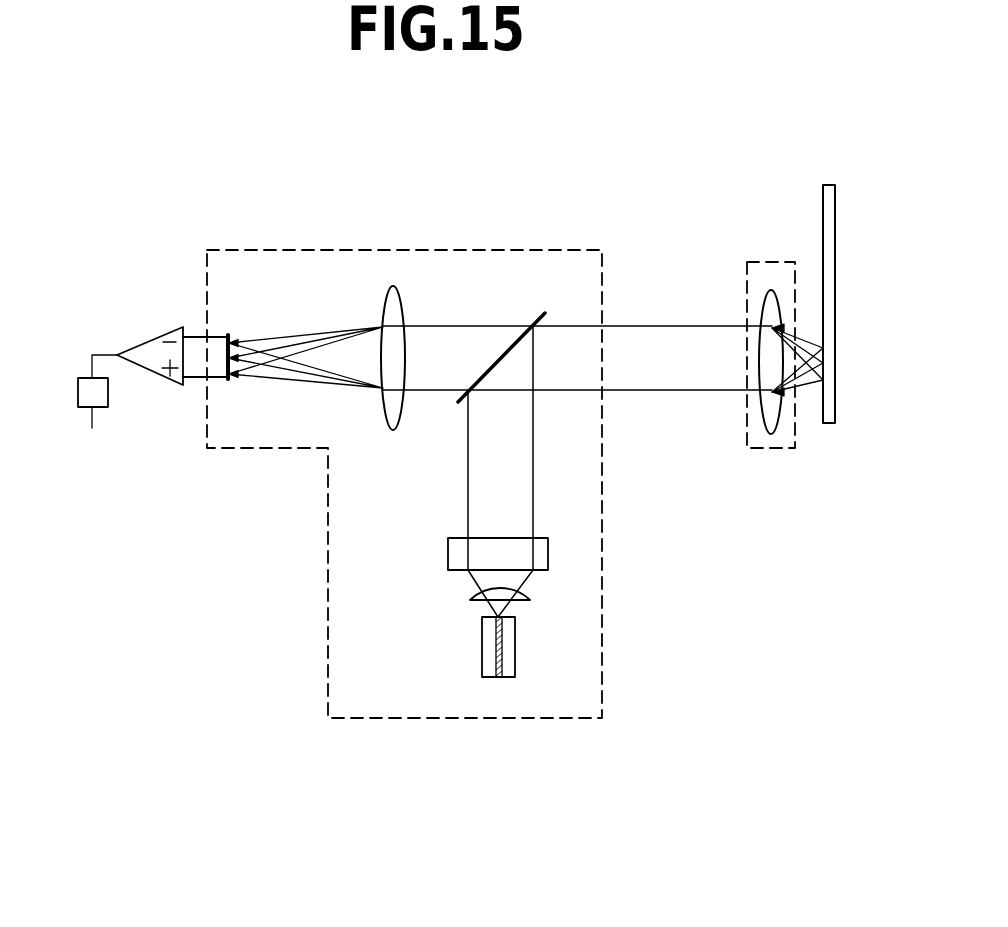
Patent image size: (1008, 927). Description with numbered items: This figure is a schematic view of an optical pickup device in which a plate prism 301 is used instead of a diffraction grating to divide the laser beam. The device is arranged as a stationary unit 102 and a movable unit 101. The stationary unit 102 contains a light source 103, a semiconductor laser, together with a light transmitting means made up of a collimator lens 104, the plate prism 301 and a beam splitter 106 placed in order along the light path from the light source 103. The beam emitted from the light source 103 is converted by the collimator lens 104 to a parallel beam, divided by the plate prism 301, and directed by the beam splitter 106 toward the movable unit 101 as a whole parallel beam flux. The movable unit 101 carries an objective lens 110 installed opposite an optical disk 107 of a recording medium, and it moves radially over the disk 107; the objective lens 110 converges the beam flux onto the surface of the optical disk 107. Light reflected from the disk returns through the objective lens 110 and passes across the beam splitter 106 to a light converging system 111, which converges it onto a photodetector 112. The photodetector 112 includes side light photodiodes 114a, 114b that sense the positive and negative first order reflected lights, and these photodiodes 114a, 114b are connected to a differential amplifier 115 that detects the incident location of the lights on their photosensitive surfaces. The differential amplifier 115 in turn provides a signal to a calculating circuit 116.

The movable unit 101 is at (745, 265).
The stationary unit 102 is at (207, 250).
The light source 103 is at (482, 638).
The collimator lens 104 is at (448, 552).
The beam splitter 106 is at (545, 313).
The optical disk 107 is at (833, 185).
The objective lens 110 is at (776, 290).
The light converging system 111 is at (395, 432).
The photodetector 112 is at (276, 306).
The side light photodiode 114a is at (228, 338).
The side light photodiode 114b is at (279, 399).
The differential amplifier 115 is at (157, 333).
The calculating circuit 116 is at (108, 393).
The plate prism 301 is at (530, 593).